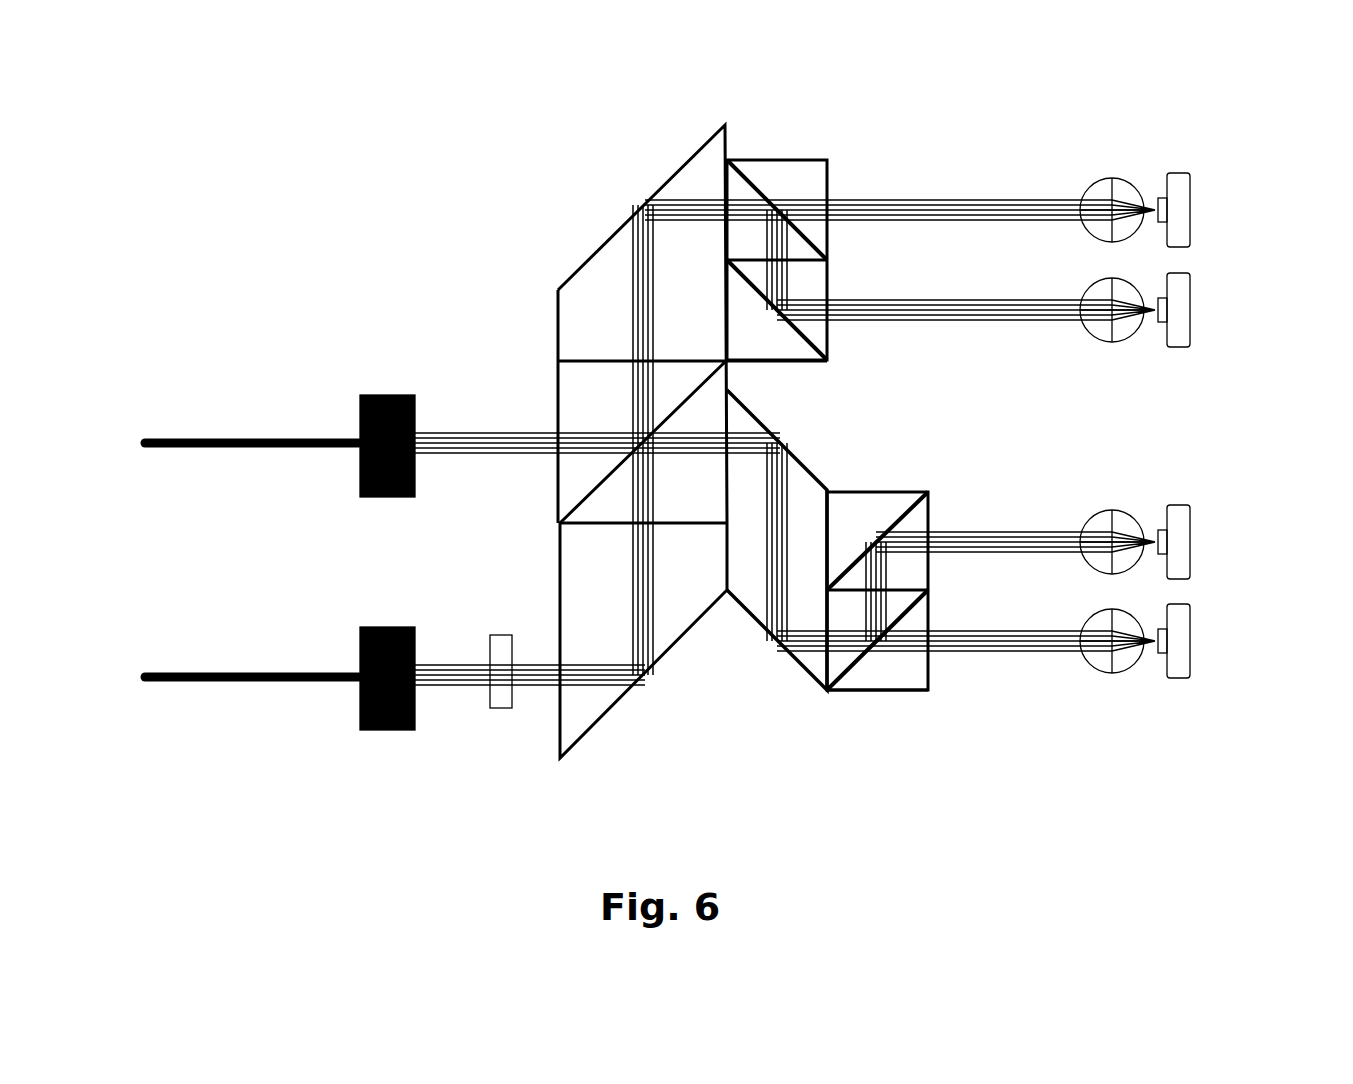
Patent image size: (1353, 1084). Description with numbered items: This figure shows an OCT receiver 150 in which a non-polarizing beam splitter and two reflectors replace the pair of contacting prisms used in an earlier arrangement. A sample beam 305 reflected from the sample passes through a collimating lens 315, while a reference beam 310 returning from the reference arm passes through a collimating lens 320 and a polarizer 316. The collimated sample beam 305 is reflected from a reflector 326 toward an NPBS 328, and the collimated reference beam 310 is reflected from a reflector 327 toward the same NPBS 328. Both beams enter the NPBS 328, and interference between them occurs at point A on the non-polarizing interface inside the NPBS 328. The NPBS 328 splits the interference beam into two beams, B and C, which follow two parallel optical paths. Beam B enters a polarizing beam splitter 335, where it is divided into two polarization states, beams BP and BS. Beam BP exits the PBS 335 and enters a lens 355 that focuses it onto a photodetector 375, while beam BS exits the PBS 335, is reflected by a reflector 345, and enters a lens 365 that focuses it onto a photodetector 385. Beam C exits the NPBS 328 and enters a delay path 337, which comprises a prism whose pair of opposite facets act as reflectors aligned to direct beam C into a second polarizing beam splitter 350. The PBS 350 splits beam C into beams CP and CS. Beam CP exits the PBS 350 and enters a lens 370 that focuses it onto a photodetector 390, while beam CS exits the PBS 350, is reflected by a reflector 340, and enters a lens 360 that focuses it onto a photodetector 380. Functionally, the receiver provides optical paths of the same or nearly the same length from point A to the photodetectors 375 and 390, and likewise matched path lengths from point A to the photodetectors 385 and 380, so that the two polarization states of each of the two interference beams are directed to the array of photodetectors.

The optical detection system 150 is at (195, 157).
The sample beam 305 is at (262, 433).
The reference beam 310 is at (252, 665).
The collimating lens 315 is at (385, 392).
The collimating lens 320 is at (375, 618).
The polarizer 316 is at (497, 712).
The reflector 326 is at (617, 230).
The reflector 327 is at (607, 722).
The NPBS 328 is at (555, 477).
The polarizing beam splitter 335 is at (836, 157).
The delay path 337 is at (797, 670).
The reflector 340 is at (930, 490).
The reflector 345 is at (790, 363).
The polarizing beam splitter 350 is at (888, 700).
The lens 355 is at (1095, 172).
The lens 360 is at (1135, 508).
The lens 365 is at (1093, 340).
The lens 370 is at (1088, 668).
The photodetector 375 is at (1194, 188).
The photodetector 380 is at (1195, 515).
The photodetector 385 is at (1194, 320).
The photodetector 390 is at (1190, 680).
The point A is at (637, 428).
The beam B is at (713, 192).
The beam C is at (760, 556).
The beam BP is at (992, 195).
The beam BS is at (1002, 296).
The beam CS is at (1052, 530).
The beam CP is at (1068, 633).